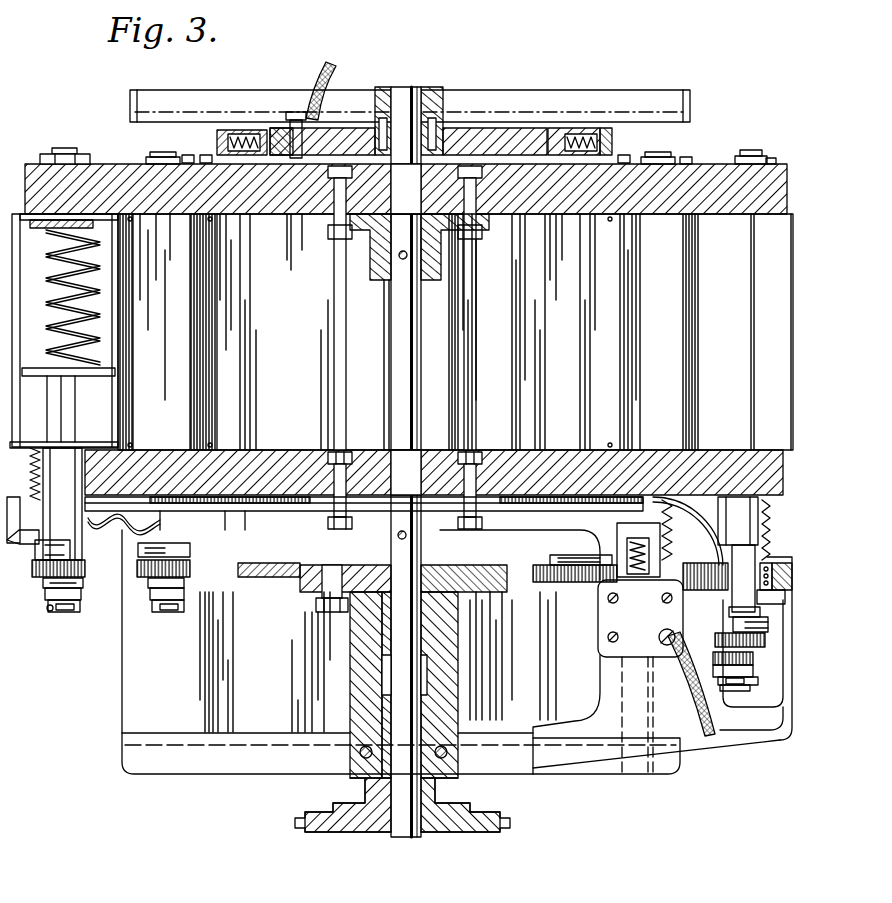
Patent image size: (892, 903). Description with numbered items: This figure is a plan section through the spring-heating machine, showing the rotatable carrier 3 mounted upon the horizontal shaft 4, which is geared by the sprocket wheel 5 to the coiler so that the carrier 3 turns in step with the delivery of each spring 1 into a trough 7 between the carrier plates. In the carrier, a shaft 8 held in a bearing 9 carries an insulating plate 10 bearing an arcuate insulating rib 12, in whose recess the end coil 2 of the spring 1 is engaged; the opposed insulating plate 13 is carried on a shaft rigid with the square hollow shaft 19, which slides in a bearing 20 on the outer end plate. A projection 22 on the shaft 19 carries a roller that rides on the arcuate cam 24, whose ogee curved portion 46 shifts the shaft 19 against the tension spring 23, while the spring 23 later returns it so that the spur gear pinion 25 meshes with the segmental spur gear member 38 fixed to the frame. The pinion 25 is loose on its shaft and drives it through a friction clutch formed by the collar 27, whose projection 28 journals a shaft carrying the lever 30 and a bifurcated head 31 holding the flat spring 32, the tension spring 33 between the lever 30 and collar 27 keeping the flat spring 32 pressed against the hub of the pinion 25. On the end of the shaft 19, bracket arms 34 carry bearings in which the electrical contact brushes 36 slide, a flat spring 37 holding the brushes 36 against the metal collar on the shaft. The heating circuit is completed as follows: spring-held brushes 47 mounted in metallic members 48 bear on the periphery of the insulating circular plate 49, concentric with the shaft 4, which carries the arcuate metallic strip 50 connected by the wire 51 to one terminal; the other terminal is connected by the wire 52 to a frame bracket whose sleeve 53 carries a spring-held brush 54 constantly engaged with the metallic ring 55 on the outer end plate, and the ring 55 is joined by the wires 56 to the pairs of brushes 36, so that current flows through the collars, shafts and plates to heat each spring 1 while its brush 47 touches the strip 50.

The spring 1 is at (82, 294).
The end coil 2 is at (45, 228).
The rotatable carrier 3 is at (118, 166).
The horizontal shaft 4 is at (420, 86).
The sprocket wheel 5 is at (484, 835).
The trough 7 is at (118, 335).
The shaft 8 is at (64, 154).
The bearing 9 is at (58, 150).
The insulating plate 10 is at (36, 214).
The arcuate flange or rib 12 is at (62, 250).
The opposed plate 13 is at (92, 376).
The square hollow shaft 19 is at (60, 418).
The bearing 20 is at (82, 530).
The projection 22 is at (35, 548).
The tension spring 23 is at (40, 462).
The arcuate cam 24 is at (312, 528).
The spur gear pinion 25 is at (85, 568).
The collar 27 is at (66, 610).
The projection 28 is at (730, 690).
The lever 30 is at (80, 608).
The bifurcated head 31 is at (83, 584).
The flat spring 32 is at (46, 590).
The tension spring 33 is at (50, 612).
The bracket arm 34 is at (190, 550).
The electrical contact brush 36 is at (733, 625).
The flat spring 37 is at (725, 640).
The segmental spur gear member 38 is at (283, 448).
The ogee curved portion 46 is at (615, 610).
The spring-held brush 47 is at (275, 128).
The metallic member 48 is at (232, 130).
The circular plate 49 is at (348, 128).
The arcuate metallic plate or strip 50 is at (296, 112).
The wire 51 is at (332, 66).
The wire 52 is at (708, 740).
The sleeve 53 is at (612, 575).
The spring-held brush 54 is at (617, 540).
The metallic ring 55 is at (282, 503).
The wire 56 is at (140, 520).